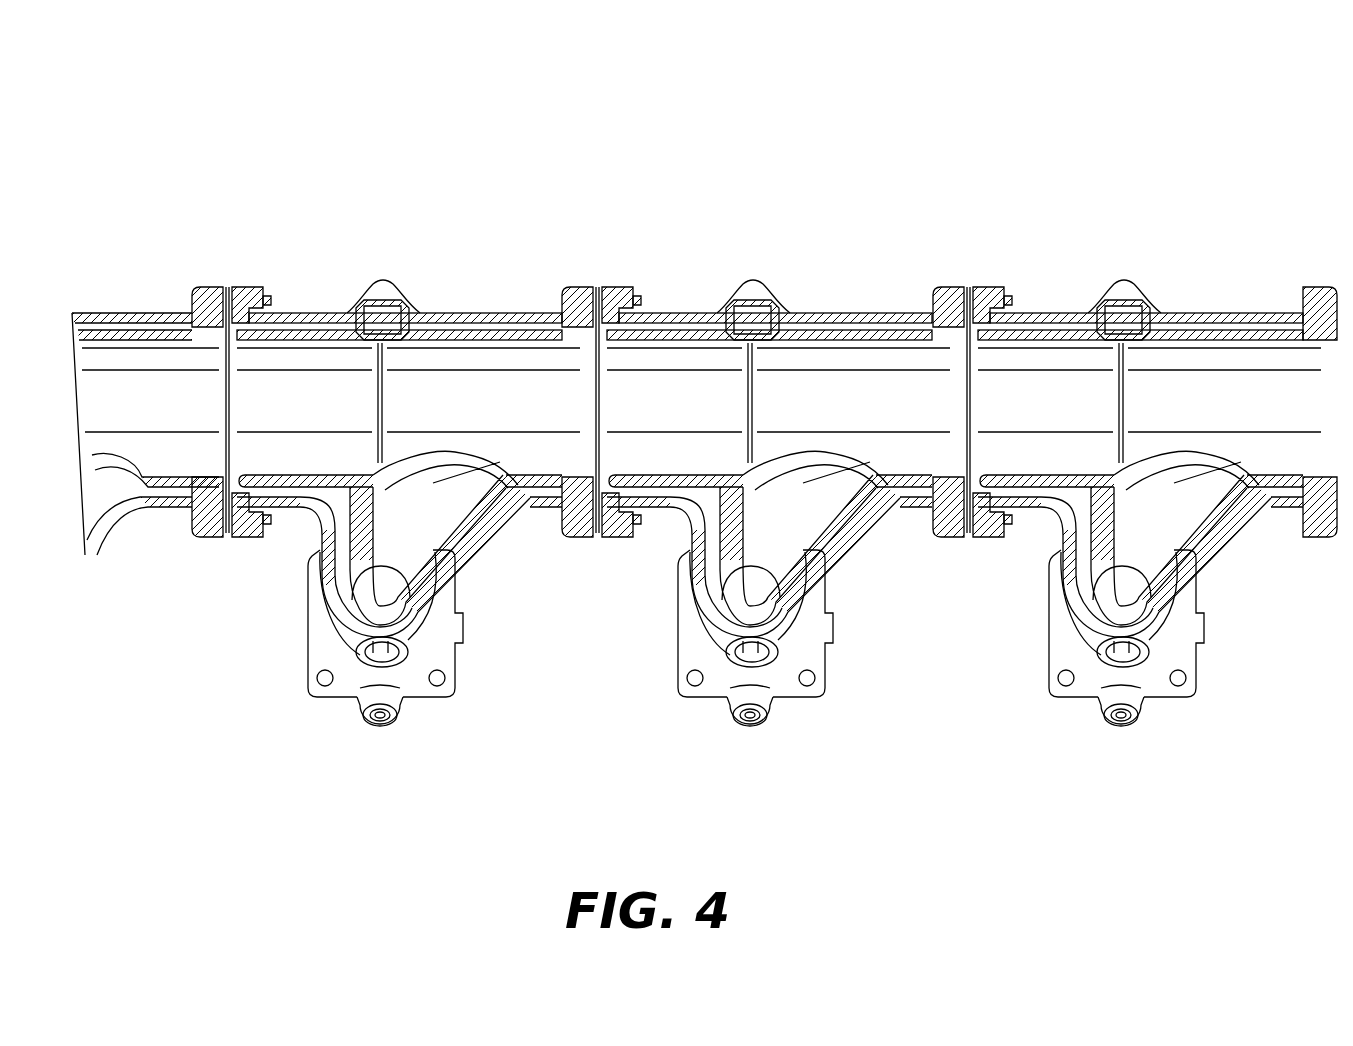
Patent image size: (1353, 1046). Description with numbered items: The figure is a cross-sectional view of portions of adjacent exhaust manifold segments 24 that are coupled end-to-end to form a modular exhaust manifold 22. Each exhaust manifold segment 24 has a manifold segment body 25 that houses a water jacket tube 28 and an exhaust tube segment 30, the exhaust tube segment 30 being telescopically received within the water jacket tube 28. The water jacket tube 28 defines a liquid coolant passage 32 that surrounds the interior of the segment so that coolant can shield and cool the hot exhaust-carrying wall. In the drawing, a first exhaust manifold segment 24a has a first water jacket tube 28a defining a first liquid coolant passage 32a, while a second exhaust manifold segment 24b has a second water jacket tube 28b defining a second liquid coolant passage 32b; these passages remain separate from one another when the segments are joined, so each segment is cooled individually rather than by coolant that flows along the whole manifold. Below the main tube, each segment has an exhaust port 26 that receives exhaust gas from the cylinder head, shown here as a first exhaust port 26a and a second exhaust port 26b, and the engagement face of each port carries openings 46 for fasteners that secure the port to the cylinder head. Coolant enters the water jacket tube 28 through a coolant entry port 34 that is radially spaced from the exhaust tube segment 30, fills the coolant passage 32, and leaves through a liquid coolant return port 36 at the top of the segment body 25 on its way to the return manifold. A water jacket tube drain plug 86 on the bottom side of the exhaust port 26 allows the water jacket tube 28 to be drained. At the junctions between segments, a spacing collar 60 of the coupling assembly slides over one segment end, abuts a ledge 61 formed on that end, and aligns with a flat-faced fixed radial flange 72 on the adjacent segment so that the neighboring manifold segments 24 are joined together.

The modular exhaust manifold 22 is at (123, 152).
The exhaust manifold segment 24 is at (386, 470).
The first exhaust manifold segment 24a is at (1127, 470).
The second exhaust manifold segment 24b is at (756, 470).
The manifold segment body 25 is at (270, 298).
The exhaust port 26 is at (378, 607).
The first exhaust port 26a is at (1122, 588).
The second exhaust port 26b is at (751, 592).
The water jacket tube 28 is at (405, 283).
The first water jacket tube 28a is at (1146, 289).
The second water jacket tube 28b is at (775, 283).
The exhaust tube segment 30 is at (408, 362).
The liquid coolant passage 32 is at (300, 298).
The first liquid coolant passage 32a is at (1140, 290).
The second liquid coolant passage 32b is at (769, 290).
The coolant entry port 34 is at (325, 659).
The liquid coolant return port 36 is at (393, 290).
The openings 46 is at (748, 701).
The spacing collar 60 is at (617, 365).
The ledge 61 is at (654, 379).
The fixed radial flange 72 is at (597, 381).
The water jacket tube drain plug 86 is at (354, 724).